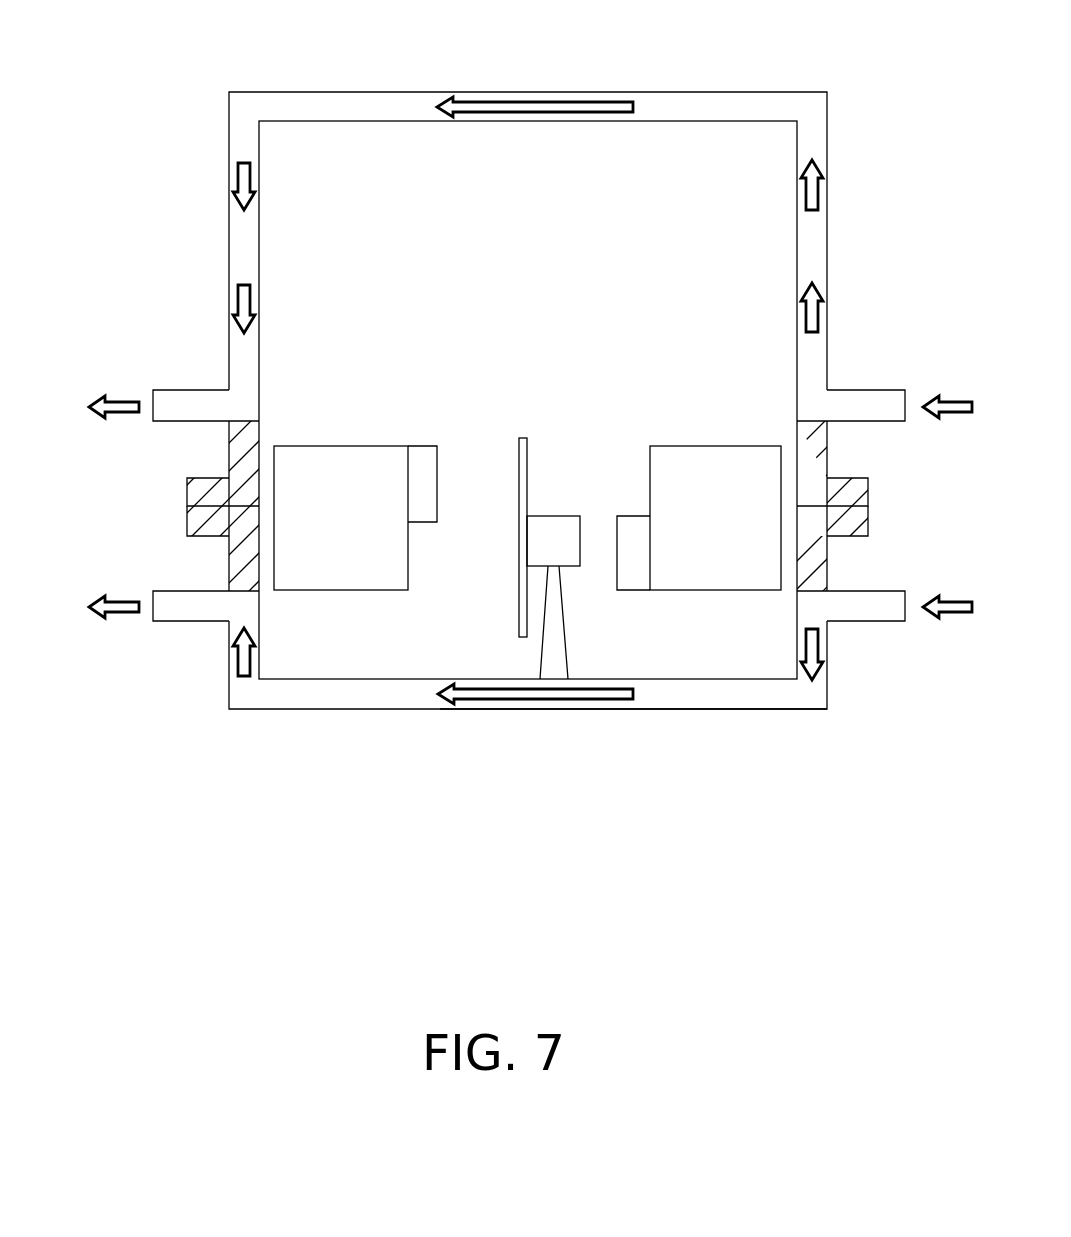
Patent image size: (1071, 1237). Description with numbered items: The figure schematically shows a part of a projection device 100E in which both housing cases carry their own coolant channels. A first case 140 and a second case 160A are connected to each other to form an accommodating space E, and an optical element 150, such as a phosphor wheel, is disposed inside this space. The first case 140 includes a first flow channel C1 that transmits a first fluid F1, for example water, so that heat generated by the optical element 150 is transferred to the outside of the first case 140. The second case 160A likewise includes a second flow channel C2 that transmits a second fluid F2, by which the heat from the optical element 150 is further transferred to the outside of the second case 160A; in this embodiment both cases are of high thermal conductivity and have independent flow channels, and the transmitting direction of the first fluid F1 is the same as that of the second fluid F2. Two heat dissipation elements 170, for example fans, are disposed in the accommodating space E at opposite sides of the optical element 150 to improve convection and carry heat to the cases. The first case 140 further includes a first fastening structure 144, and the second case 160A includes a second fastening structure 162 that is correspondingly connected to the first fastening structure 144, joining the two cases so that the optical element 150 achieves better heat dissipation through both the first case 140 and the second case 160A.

The projection device 100E is at (166, 72).
The accommodating space E is at (352, 145).
The first fluid F1 is at (525, 107).
The second fluid F2 is at (527, 698).
The first flow channel C1 is at (718, 108).
The second flow channel C2 is at (330, 698).
The first case 140 is at (820, 125).
The first fastening structure 144 is at (238, 453).
The second fastening structure 162 is at (236, 578).
The heat dissipation element 170 is at (345, 462).
The optical element 150 is at (561, 528).
The second case 160A is at (703, 710).